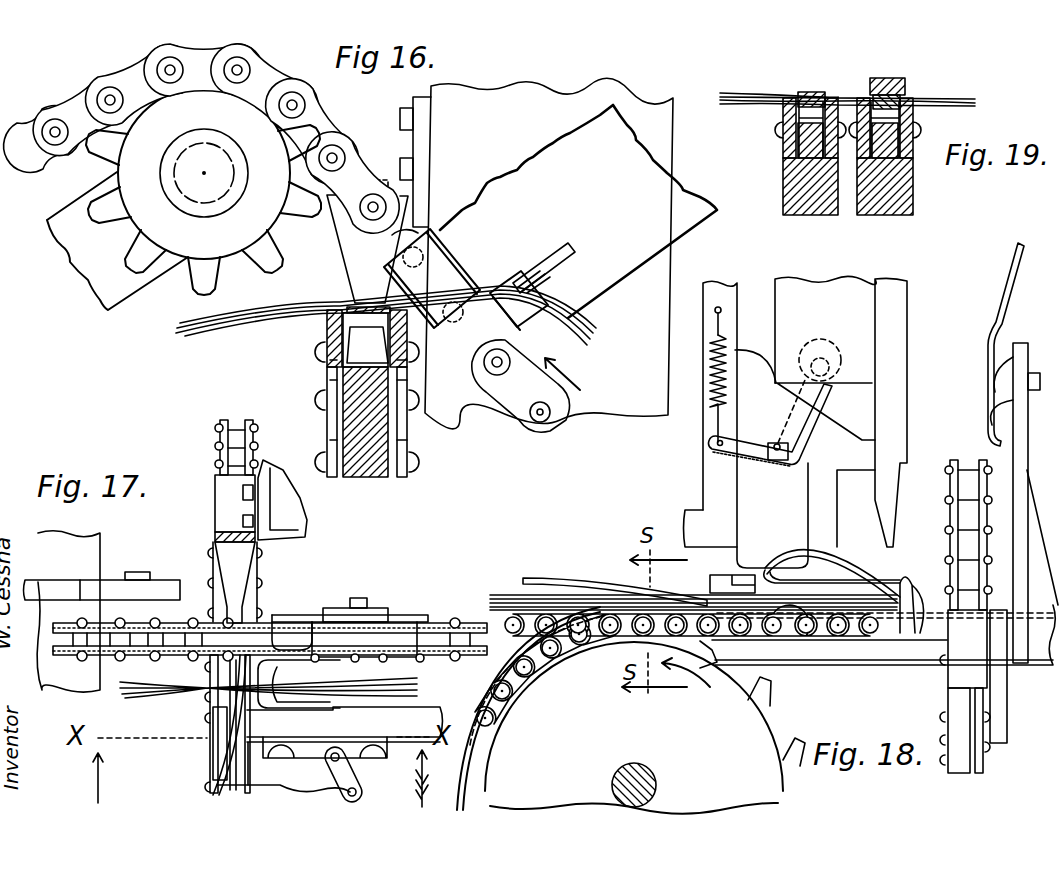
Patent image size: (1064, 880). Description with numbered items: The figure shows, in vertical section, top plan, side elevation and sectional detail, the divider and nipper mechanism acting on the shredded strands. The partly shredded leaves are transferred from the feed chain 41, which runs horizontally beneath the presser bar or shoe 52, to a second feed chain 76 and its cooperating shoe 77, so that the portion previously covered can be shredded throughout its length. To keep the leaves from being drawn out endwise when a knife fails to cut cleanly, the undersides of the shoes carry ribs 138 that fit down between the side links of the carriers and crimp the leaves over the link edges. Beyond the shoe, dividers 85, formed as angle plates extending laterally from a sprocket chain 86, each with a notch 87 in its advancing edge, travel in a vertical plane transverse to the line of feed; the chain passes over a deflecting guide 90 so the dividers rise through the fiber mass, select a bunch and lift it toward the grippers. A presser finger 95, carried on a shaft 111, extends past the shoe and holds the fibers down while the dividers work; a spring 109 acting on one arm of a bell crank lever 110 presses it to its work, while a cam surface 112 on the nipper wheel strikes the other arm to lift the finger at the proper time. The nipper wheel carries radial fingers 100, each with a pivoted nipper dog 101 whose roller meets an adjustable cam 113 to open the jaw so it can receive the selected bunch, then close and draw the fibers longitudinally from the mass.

In FIG. 19, the feed chain 41 is at (913, 112).
In FIG. 19, the presser bar or shoe 52 is at (903, 70).
In FIG. 16, the second feed chain 76 is at (332, 362).
In FIG. 17, the second feed chain 76 is at (215, 562).
In FIG. 18, the second feed chain 76 is at (815, 636).
In FIG. 19, the second feed chain 76 is at (783, 145).
In FIG. 16, the shoe 77 is at (332, 330).
In FIG. 17, the shoe 77 is at (268, 688).
In FIG. 18, the shoe 77 is at (802, 600).
In FIG. 19, the shoe 77 is at (797, 97).
In FIG. 16, the dividers 85 is at (453, 258).
In FIG. 17, the dividers 85 is at (325, 667).
In FIG. 18, the dividers 85 is at (937, 583).
In FIG. 16, the sprocket chain 86 is at (343, 146).
In FIG. 17, the sprocket chain 86 is at (269, 651).
In FIG. 18, the sprocket chain 86 is at (950, 483).
In FIG. 17, the notch 87 is at (253, 700).
In FIG. 18, the notch 87 is at (910, 592).
In FIG. 16, the deflecting guide 90 is at (223, 247).
In FIG. 18, the deflecting guide 90 is at (1000, 465).
In FIG. 16, the presser finger 95 is at (347, 258).
In FIG. 17, the presser finger 95 is at (213, 753).
In FIG. 18, the presser finger 95 is at (847, 557).
In FIG. 16, the radial fingers 100 is at (598, 280).
In FIG. 16, the nipper dog 101 is at (530, 279).
In FIG. 18, the spring 109 is at (712, 405).
In FIG. 17, the bell crank lever 110 is at (362, 778).
In FIG. 18, the bell crank lever 110 is at (782, 440).
In FIG. 18, the shaft 111 is at (772, 463).
In FIG. 17, the cam surface 112 is at (290, 770).
In FIG. 18, the cam 113 is at (1000, 292).
In FIG. 19, the ribs 138 is at (808, 92).